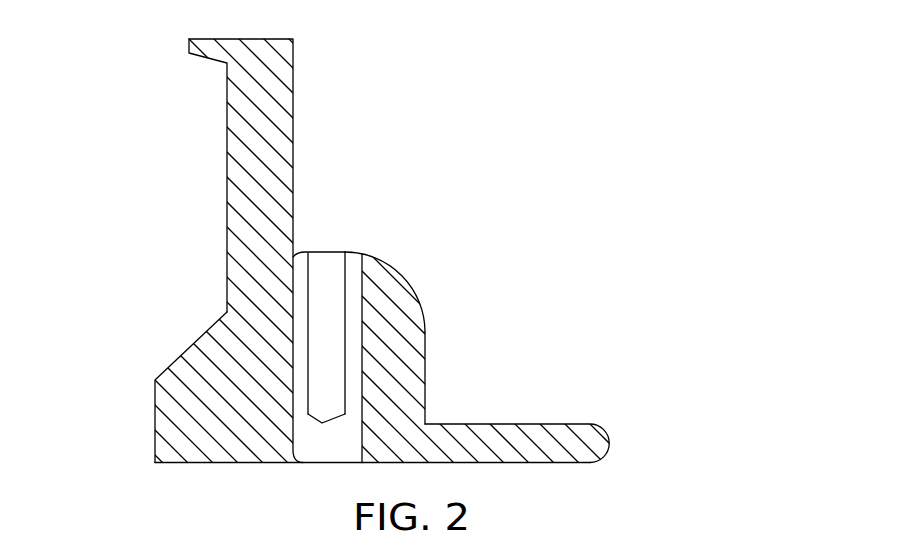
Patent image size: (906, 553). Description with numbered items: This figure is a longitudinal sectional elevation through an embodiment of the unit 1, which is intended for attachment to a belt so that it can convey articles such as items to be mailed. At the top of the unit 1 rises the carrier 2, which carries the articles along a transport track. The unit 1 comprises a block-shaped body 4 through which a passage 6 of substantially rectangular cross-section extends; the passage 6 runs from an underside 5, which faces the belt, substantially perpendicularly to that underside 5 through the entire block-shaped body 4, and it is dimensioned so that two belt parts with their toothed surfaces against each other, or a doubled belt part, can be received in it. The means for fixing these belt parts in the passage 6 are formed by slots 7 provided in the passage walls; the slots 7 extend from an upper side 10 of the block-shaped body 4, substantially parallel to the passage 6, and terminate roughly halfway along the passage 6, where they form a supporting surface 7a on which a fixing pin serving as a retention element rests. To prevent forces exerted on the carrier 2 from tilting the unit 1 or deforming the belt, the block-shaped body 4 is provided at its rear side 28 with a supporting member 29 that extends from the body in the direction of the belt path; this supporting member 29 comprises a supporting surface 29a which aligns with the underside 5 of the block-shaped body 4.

The unit 1 is at (648, 192).
The carrier 2 is at (263, 108).
The block-shaped body 4 is at (262, 368).
The underside 5 is at (247, 465).
The passage 6 is at (332, 445).
The slots 7 is at (308, 302).
The supporting surface 7a is at (322, 421).
The upper side 10 is at (355, 254).
The rear side 28 is at (425, 406).
The supporting member 29 is at (563, 440).
The supporting surface 29a is at (560, 463).